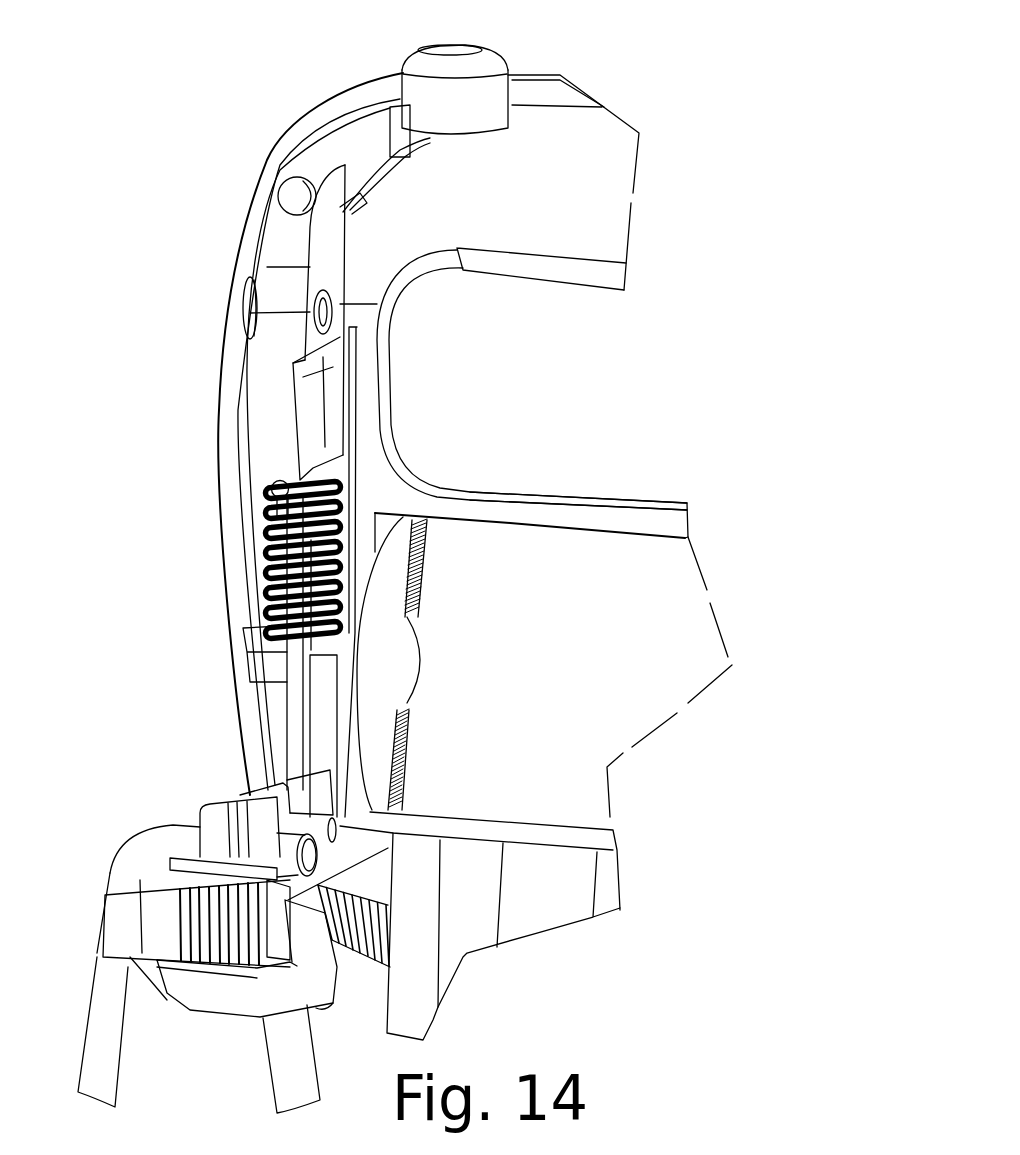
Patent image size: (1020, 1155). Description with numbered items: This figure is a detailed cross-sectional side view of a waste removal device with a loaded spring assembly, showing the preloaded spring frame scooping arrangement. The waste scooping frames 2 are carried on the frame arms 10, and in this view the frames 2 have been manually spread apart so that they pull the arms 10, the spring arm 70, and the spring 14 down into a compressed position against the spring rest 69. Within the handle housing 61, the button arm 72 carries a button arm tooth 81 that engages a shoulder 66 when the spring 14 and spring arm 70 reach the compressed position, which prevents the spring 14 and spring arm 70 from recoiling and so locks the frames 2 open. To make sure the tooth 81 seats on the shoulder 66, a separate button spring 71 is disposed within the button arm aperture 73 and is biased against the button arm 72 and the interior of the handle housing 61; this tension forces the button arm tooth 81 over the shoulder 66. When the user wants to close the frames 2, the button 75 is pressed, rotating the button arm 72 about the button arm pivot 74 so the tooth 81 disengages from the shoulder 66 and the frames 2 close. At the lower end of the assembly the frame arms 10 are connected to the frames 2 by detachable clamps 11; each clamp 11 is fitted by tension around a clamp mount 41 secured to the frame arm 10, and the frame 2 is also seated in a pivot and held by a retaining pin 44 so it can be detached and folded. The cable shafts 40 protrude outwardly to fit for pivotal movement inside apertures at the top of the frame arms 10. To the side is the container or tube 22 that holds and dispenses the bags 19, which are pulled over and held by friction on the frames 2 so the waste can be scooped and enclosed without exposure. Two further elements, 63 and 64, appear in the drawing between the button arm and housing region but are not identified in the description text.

The waste scooping frames 2 is at (90, 1033).
The frame arms 10 is at (275, 780).
The detachable clamps 11 is at (110, 923).
The spring 14 is at (293, 573).
The bags 19 is at (495, 580).
The container or tube 22 is at (640, 520).
The cable shafts 40 is at (393, 832).
The clamp mount 41 is at (222, 1003).
The retaining pin 44 is at (235, 798).
The handle housing 61 is at (623, 147).
The arcuate guide 63 is at (340, 205).
The channel guide 64 is at (345, 395).
The shoulder 66 is at (280, 494).
The spring rest 69 is at (257, 638).
The spring arm 70 is at (290, 677).
The button spring 71 is at (243, 315).
The button arm 72 is at (333, 162).
The button arm aperture 73 is at (335, 302).
The button arm pivot 74 is at (290, 200).
The button 75 is at (452, 42).
The button arm tooth 81 is at (277, 481).